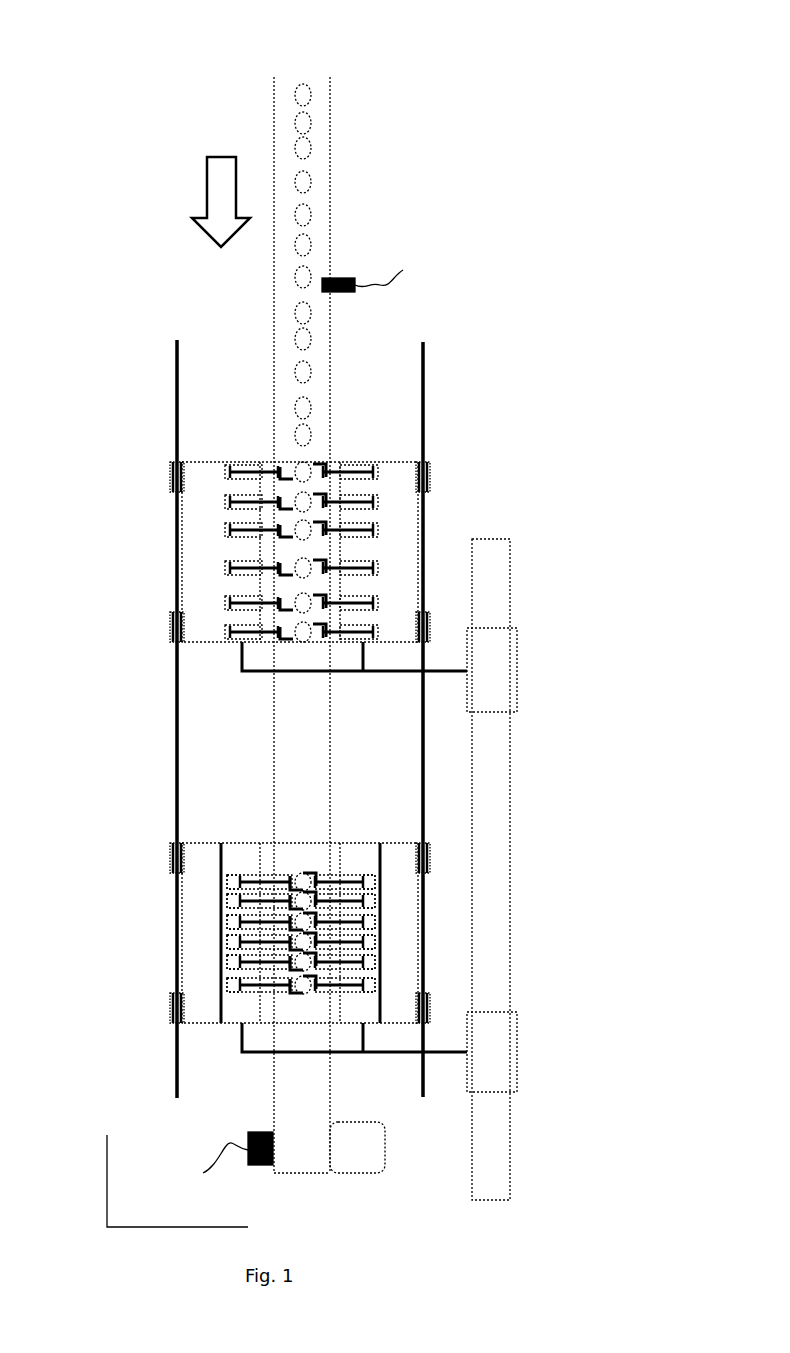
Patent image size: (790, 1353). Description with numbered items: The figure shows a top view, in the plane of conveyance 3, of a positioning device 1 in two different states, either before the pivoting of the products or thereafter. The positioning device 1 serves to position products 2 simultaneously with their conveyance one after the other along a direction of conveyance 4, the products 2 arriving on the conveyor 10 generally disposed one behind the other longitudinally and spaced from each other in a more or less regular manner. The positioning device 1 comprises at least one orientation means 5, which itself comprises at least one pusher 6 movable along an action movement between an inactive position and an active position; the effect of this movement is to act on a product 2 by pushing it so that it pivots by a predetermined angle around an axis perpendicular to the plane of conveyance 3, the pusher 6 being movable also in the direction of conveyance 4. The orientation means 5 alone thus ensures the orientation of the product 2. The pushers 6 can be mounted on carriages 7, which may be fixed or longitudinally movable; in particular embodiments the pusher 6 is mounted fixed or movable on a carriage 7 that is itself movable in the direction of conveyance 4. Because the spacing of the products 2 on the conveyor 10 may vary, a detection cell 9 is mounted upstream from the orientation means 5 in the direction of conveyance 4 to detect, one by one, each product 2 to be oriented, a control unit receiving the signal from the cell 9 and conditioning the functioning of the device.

The positioning device 1 is at (572, 430).
The products 2 is at (305, 245).
The plane of conveyance 3 is at (128, 1203).
The direction of conveyance 4 is at (230, 198).
The orientation means 5 is at (200, 475).
The pusher 6 is at (262, 450).
The carriage 7 is at (193, 922).
The detection cell 9 is at (370, 270).
The conveyor 10 is at (318, 150).